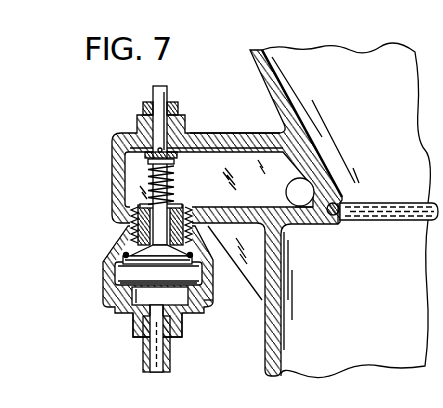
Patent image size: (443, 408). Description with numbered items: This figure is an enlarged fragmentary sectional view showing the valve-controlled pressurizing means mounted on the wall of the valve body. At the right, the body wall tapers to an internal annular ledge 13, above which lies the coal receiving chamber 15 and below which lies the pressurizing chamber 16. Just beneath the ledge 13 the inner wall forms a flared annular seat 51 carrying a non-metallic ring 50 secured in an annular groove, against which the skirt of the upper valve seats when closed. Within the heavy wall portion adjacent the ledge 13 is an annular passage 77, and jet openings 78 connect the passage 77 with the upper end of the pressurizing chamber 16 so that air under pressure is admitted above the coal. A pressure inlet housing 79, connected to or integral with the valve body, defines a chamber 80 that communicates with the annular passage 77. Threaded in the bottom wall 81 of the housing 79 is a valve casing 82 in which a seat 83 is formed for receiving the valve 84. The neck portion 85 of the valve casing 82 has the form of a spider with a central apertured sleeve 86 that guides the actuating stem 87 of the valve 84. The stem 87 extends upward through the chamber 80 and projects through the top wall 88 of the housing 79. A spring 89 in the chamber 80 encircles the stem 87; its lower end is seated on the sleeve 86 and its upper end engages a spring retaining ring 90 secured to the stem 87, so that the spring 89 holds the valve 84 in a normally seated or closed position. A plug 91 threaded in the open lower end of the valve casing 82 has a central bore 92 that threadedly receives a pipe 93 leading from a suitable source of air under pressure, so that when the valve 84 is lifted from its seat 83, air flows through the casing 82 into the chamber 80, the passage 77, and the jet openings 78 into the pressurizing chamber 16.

The internal annular ledge 13 is at (382, 203).
The coal receiving chamber 15 is at (346, 123).
The pressurizing chamber 16 is at (354, 299).
The non-metallic ring 50 is at (339, 217).
The flared annular seat 51 is at (331, 218).
The annular passage 77 is at (290, 189).
The jet openings 78 is at (307, 212).
The pressure inlet housing 79 is at (112, 183).
The chamber 80 is at (219, 181).
The bottom wall 81 is at (211, 230).
The valve casing 82 is at (105, 292).
The seat 83 is at (125, 254).
The valve 84 is at (205, 300).
The neck portion 85 is at (173, 234).
The central apertured sleeve 86 is at (172, 206).
The actuating stem 87 is at (152, 90).
The top wall 88 is at (207, 133).
The spring 89 is at (150, 163).
The spring retaining ring 90 is at (147, 152).
The plug 91 is at (137, 336).
The central bore 92 is at (153, 316).
The pipe 93 is at (143, 366).